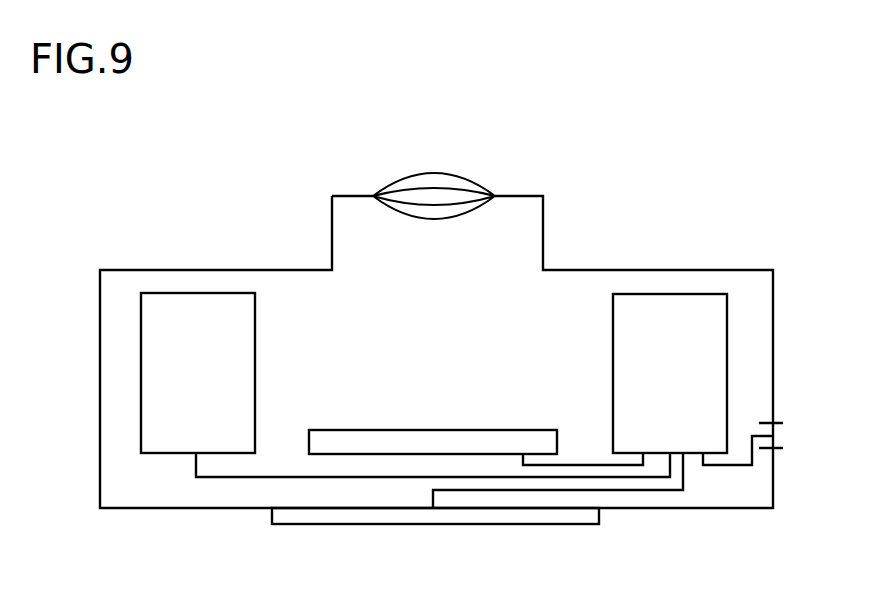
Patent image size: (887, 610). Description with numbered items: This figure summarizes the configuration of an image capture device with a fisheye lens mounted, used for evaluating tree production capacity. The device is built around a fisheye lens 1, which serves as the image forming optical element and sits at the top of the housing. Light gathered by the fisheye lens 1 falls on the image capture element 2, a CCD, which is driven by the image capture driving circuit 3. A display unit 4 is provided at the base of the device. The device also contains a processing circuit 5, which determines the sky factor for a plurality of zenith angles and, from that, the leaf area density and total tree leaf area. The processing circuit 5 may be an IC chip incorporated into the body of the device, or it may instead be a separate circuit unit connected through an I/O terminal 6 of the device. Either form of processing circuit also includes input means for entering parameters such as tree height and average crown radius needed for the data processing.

The fisheye lens 1 is at (441, 169).
The image capture element 2 is at (483, 432).
The image capture driving circuit 3 is at (713, 357).
The display unit 4 is at (482, 524).
The processing circuit 5 is at (158, 393).
The I/O terminal 6 is at (786, 432).